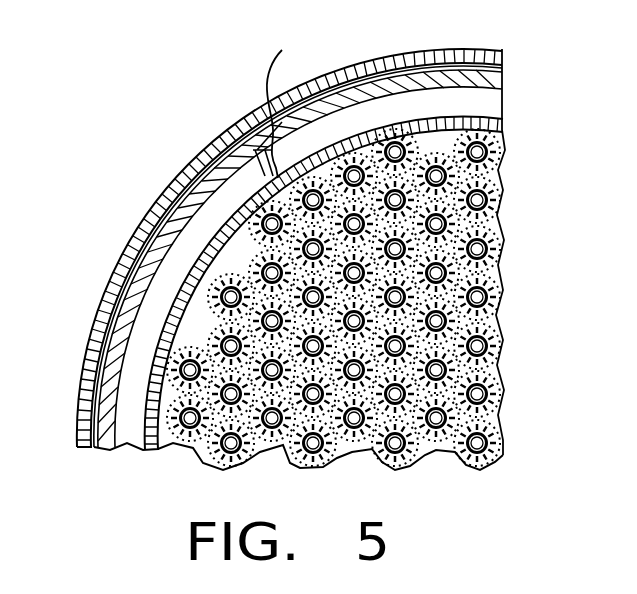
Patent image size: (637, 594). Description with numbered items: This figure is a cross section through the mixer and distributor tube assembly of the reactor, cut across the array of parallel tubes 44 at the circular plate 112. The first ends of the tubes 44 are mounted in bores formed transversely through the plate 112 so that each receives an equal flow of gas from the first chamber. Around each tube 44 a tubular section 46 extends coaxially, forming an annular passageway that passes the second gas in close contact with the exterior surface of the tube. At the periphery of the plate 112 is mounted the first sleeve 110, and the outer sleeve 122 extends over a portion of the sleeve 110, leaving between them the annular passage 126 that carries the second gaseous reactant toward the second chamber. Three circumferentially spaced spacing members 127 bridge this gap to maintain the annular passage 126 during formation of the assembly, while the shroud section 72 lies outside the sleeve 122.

The shroud section 72 is at (207, 147).
The outer sleeve 122 is at (155, 211).
The annular passage 126 is at (157, 290).
The first sleeve 110 is at (140, 450).
The spacing members 127 is at (297, 97).
The circular plate 112 is at (500, 173).
The tubes 44 is at (500, 205).
The tubular sections 46 is at (503, 277).